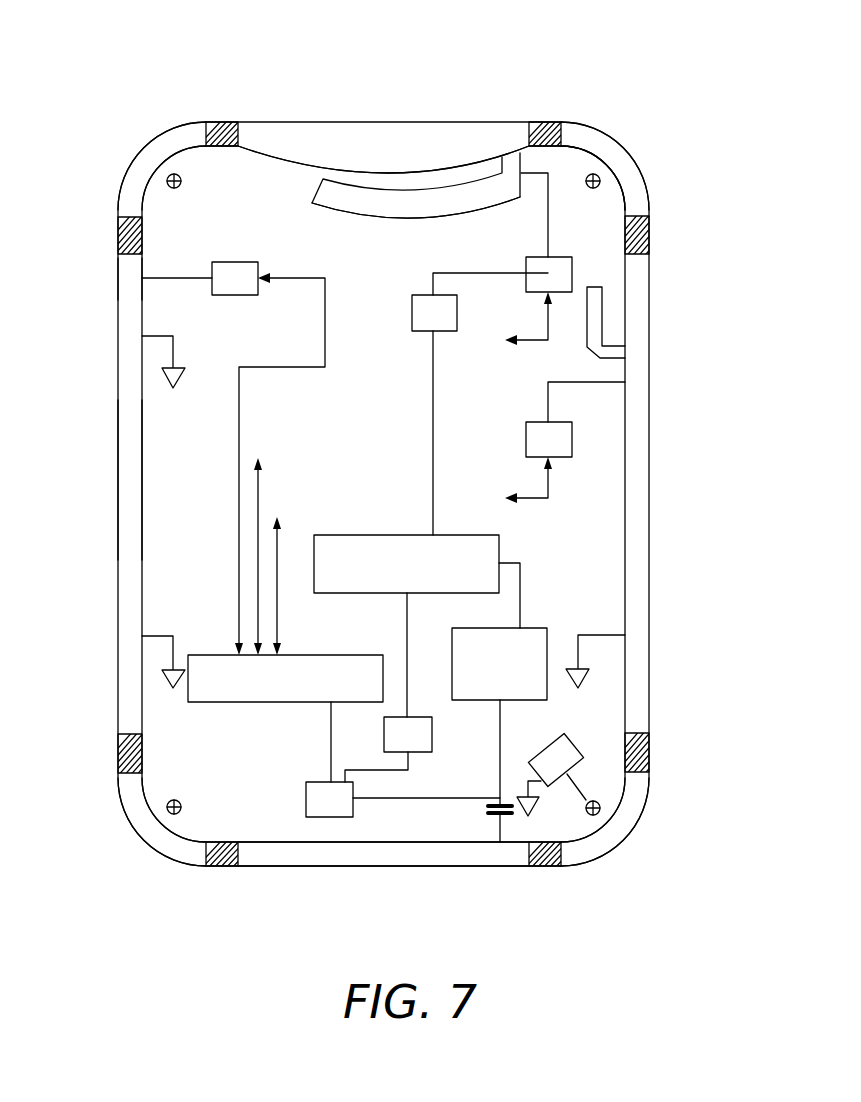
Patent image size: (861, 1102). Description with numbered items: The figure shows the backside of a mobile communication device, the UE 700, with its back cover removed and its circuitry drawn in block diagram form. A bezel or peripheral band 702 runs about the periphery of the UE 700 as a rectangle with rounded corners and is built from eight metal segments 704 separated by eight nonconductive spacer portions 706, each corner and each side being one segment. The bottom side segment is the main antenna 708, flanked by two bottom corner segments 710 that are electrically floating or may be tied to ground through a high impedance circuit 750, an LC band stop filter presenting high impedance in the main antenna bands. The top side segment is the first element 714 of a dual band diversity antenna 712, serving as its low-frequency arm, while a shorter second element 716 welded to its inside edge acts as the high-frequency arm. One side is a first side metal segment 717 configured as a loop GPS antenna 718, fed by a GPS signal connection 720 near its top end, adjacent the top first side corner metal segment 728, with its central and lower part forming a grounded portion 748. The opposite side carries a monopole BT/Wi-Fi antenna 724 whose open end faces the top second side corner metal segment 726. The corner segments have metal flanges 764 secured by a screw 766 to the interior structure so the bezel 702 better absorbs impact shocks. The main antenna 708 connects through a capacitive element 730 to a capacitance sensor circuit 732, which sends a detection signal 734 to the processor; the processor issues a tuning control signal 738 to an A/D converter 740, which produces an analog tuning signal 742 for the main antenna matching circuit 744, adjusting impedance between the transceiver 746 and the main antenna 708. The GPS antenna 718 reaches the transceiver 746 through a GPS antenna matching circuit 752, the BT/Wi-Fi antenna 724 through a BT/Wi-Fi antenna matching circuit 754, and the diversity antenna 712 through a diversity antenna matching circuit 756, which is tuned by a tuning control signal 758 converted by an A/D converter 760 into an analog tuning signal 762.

The mobile communication device (UE) 700 is at (760, 58).
The peripheral band (bezel) 702 is at (638, 452).
The metal segments 704 is at (252, 124).
The nonconductive spacer portion 706 is at (553, 120).
The main antenna 708 is at (271, 855).
The bottom corner segments 710 is at (142, 828).
The diversity antenna 712 is at (328, 132).
The first element 714 is at (442, 135).
The second element 716 is at (448, 215).
The first side metal segment 717 is at (128, 485).
The GPS antenna 718 is at (128, 278).
The GPS signal connection 720 is at (179, 272).
The monopole BT/Wi-Fi antenna 724 is at (592, 312).
The top second side corner metal segment 726 is at (613, 145).
The top first side corner metal segment 728 is at (163, 142).
The capacitive element 730 is at (508, 817).
The capacitance sensor circuit 732 is at (530, 628).
The detection signal 734 is at (520, 563).
The tuning control signal 738 is at (405, 618).
The analog to digital (A/D) converter 740 is at (430, 752).
The analog tuning signal 742 is at (397, 812).
The main antenna matching circuit 744 is at (315, 783).
The transceiver 746 is at (218, 703).
The grounded portion 748 is at (128, 636).
The high impedance circuit (HI) 750 is at (574, 734).
The GPS antenna matching circuit 752 is at (236, 260).
The BT/Wi-Fi antenna matching circuit 754 is at (568, 382).
The diversity antenna matching circuit 756 is at (330, 535).
The tuning control signal 758 is at (432, 384).
The A/D converter 760 is at (414, 294).
The analog tuning signal 762 is at (485, 272).
The metal flanges 764 is at (613, 193).
The screw 766 is at (178, 185).